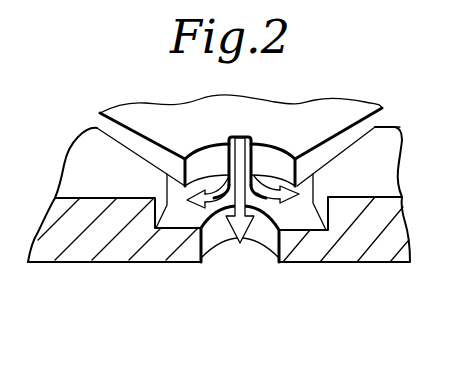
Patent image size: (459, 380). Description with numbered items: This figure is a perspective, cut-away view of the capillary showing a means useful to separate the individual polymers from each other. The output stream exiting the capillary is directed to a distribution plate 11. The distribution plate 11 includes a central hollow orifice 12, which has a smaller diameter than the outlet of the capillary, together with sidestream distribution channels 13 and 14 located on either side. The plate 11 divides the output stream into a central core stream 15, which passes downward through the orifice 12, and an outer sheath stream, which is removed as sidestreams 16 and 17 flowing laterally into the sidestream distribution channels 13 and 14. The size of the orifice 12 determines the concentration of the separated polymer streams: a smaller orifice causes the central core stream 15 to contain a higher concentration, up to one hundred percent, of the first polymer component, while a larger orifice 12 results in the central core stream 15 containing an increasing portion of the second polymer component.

The distribution plate 11 is at (312, 102).
The central hollow orifice 12 is at (207, 246).
The sidestream distribution channel 13 is at (376, 126).
The sidestream distribution channel 14 is at (98, 128).
The central core stream 15 is at (249, 240).
The sidestream 16 is at (193, 190).
The sidestream 17 is at (285, 188).